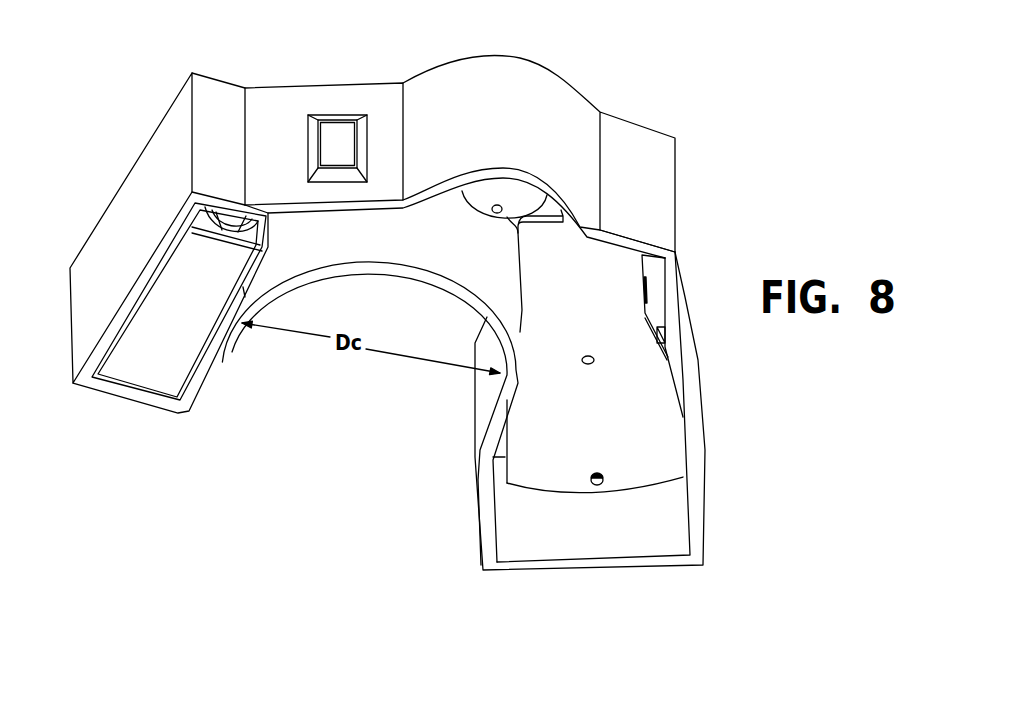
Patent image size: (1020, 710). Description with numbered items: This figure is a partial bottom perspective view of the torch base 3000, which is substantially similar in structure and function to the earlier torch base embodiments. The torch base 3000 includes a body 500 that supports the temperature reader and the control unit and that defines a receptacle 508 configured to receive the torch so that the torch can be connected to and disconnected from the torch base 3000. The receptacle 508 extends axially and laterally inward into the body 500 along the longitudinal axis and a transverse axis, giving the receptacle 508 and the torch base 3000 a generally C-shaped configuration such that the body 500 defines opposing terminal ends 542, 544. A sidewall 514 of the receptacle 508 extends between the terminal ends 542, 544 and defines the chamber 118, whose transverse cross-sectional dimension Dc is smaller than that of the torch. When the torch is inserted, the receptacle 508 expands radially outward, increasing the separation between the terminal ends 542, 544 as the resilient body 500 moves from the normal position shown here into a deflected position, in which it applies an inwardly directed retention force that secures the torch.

The body 500 is at (125, 148).
The receptacle 508 is at (433, 232).
The torch base 3000 is at (631, 79).
The terminal end 544 is at (115, 398).
The terminal end 542 is at (600, 570).
The sidewall 514 is at (407, 272).
The chamber 118 is at (360, 418).